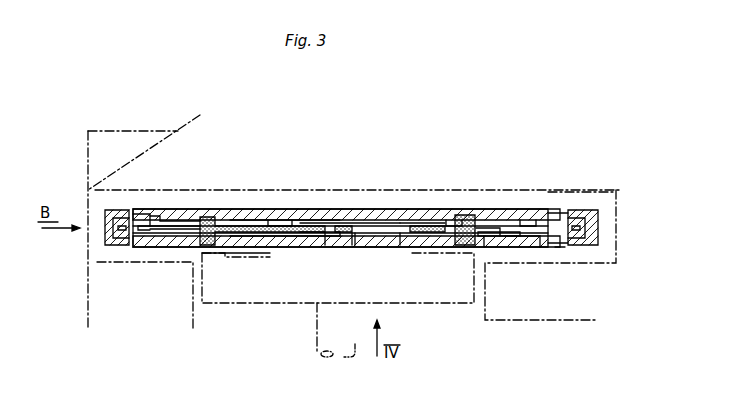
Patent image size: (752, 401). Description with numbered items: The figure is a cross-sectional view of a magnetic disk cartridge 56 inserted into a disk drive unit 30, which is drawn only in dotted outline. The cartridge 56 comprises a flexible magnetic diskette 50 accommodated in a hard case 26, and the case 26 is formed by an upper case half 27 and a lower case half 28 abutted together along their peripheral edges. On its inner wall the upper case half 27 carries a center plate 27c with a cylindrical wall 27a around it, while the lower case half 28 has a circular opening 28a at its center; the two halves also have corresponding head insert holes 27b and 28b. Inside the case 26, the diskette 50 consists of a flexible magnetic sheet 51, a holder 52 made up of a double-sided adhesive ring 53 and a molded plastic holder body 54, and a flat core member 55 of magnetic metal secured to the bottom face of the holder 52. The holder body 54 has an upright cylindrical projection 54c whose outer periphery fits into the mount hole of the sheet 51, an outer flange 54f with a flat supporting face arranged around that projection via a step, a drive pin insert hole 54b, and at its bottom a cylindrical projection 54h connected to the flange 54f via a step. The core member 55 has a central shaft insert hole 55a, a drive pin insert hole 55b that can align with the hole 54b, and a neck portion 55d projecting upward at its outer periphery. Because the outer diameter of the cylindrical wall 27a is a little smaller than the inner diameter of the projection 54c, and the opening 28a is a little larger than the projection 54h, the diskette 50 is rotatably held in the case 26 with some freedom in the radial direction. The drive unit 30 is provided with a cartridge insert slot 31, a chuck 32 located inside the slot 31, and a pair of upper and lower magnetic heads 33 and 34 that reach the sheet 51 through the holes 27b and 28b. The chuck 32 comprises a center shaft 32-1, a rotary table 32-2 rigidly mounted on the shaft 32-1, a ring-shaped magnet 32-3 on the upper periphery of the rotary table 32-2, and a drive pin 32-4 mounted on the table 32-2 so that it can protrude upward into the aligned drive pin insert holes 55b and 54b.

The disk drive unit 30 is at (84, 168).
The cartridge insert slot 31 is at (104, 254).
The hard case 26 is at (655, 200).
The upper case half 27 is at (600, 213).
The cylindrical wall 27a is at (462, 218).
The head insert hole 27b is at (528, 215).
The center plate 27c is at (292, 220).
The lower case half 28 is at (600, 240).
The circular opening 28a is at (490, 258).
The head insert hole 28b is at (520, 250).
The chuck 32 is at (248, 305).
The center shaft 32-1 is at (347, 210).
The rotary table 32-2 is at (291, 305).
The ring-shaped magnet 32-3 is at (240, 255).
The drive pin 32-4 is at (420, 210).
The upper magnetic head 33 is at (572, 192).
The lower magnetic head 34 is at (560, 250).
The flexible magnetic diskette 50 is at (270, 230).
The flexible magnetic sheet 51 is at (140, 218).
The holder 52 is at (203, 135).
The double-sided adhesive ring 53 is at (178, 226).
The holder body 54 is at (205, 222).
The drive pin insert hole 54b is at (402, 224).
The upright cylindrical projection 54c is at (476, 222).
The outer flange 54f is at (497, 246).
The cylindrical projection 54h is at (460, 248).
The core member 55 is at (290, 247).
The shaft insert hole 55a is at (328, 247).
The drive pin insert hole 55b is at (396, 247).
The neck portion 55d is at (352, 247).
The magnetic disk cartridge 56 is at (256, 200).